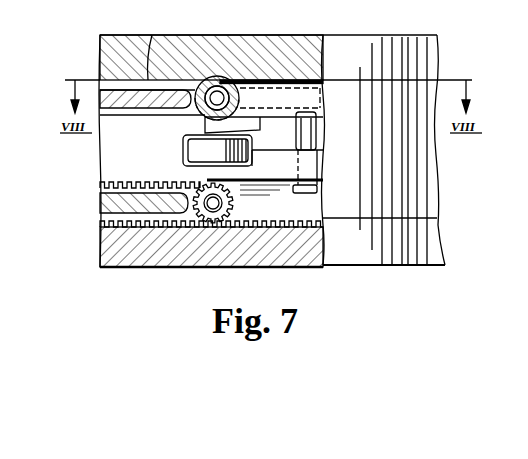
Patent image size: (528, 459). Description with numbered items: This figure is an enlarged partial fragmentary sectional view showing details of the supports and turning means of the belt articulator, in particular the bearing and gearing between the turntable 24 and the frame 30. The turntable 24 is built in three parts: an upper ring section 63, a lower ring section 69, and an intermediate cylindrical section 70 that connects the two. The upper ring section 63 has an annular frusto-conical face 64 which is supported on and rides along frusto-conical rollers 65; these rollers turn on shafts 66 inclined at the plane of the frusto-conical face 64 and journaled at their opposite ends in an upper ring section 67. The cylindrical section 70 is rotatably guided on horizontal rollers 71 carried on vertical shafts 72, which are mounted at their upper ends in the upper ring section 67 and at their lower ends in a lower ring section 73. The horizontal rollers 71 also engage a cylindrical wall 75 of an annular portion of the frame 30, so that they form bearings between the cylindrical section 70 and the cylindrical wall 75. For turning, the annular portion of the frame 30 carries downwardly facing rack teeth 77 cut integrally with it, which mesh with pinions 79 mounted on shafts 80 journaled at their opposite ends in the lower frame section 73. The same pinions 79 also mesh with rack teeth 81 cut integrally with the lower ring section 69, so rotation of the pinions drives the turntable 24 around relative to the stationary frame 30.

The turntable 24 is at (96, 266).
The frame 30 is at (100, 165).
The upper ring section 63 is at (103, 60).
The frusto-conical face 64 is at (152, 35).
The frusto-conical rollers 65 is at (201, 78).
The shafts 66 is at (221, 87).
The upper ring section 67 is at (272, 80).
The lower ring section 69 is at (420, 264).
The intermediate cylindrical section 70 is at (425, 163).
The horizontal rollers 71 is at (247, 158).
The vertical shafts 72 is at (236, 121).
The lower ring section 73 is at (285, 210).
The cylindrical wall 75 is at (156, 162).
The rack teeth 77 is at (100, 188).
The pinions 79 is at (208, 212).
The shafts 80 is at (220, 210).
The rack teeth 81 is at (100, 222).